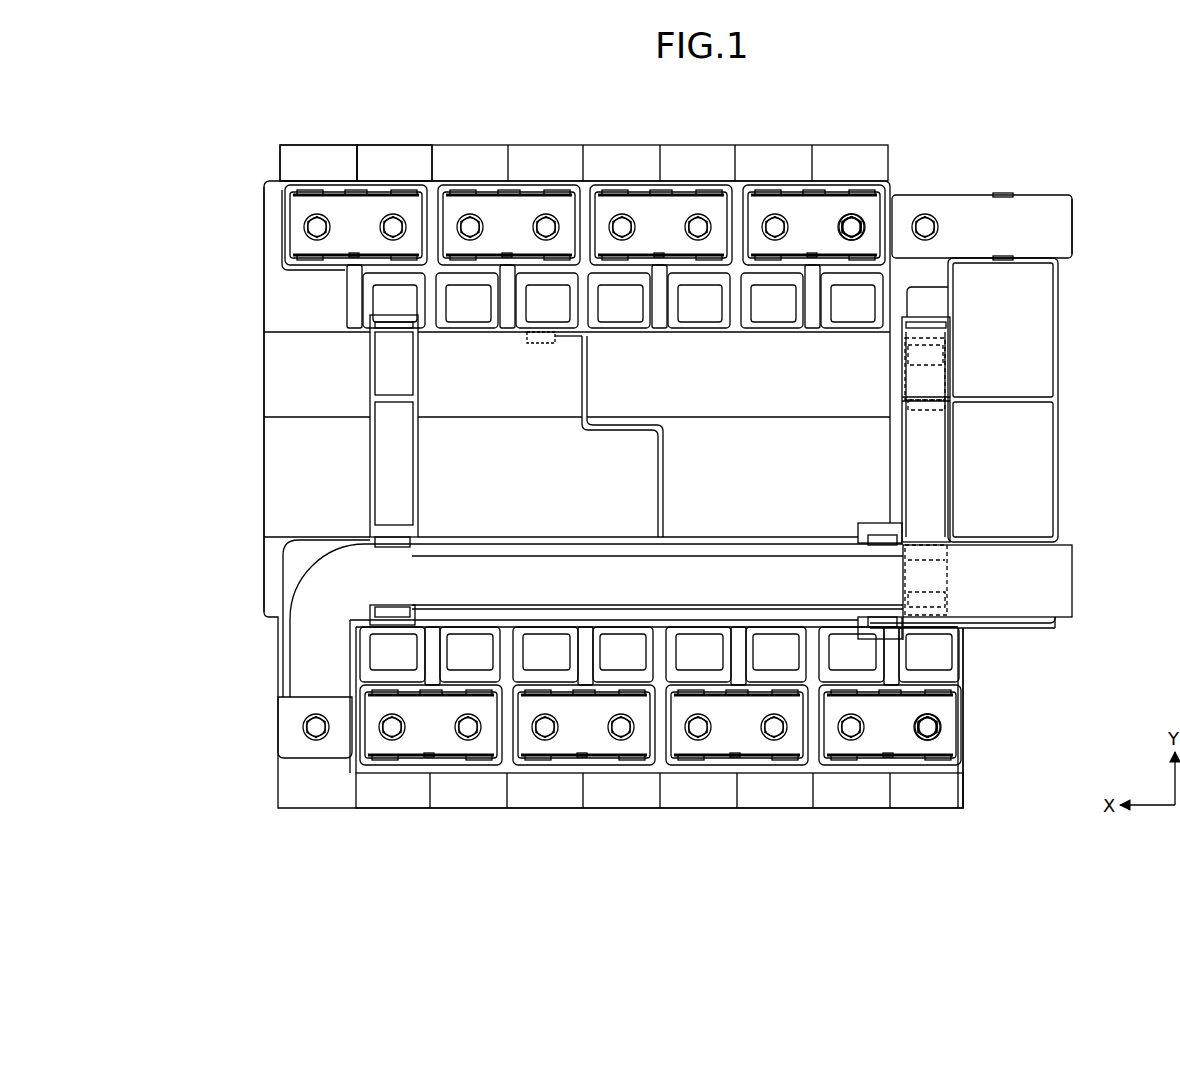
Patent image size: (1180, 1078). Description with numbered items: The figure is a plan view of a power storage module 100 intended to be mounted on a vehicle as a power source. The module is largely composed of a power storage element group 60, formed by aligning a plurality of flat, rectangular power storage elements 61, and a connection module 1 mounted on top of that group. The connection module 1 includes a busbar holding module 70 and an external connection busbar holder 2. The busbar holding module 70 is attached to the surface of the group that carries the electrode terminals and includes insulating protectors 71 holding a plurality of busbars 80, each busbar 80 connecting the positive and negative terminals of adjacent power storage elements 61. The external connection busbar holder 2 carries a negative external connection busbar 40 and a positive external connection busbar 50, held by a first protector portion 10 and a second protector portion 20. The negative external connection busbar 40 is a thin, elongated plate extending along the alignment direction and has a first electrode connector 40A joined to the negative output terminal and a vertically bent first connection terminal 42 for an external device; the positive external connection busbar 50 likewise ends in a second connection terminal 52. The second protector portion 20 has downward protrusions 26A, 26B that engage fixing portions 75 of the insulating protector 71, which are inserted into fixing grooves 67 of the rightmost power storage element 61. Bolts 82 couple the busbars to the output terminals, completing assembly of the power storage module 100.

The connection module 1 is at (1057, 731).
The external connection busbar holder 2 is at (1016, 630).
The first protector portion 10 is at (278, 600).
The second protector portion 20 is at (1066, 380).
The protrusion 26A is at (940, 355).
The protrusion 26B is at (948, 607).
The negative external connection busbar 40 is at (322, 590).
The first electrode connector 40A is at (300, 745).
The first connection terminal 42 is at (1072, 580).
The positive external connection busbar 50 is at (1022, 214).
The second connection terminal 52 is at (1073, 228).
The power storage element group 60 is at (758, 143).
The power storage element 61 is at (303, 150).
The fixing groove 67 is at (930, 410).
The busbar holding module 70 is at (256, 185).
The insulating protector 71 is at (262, 458).
The fixing portion 75 is at (930, 380).
The busbar 80 is at (668, 235).
The bolt 82 is at (847, 227).
The power storage module 100 is at (886, 839).